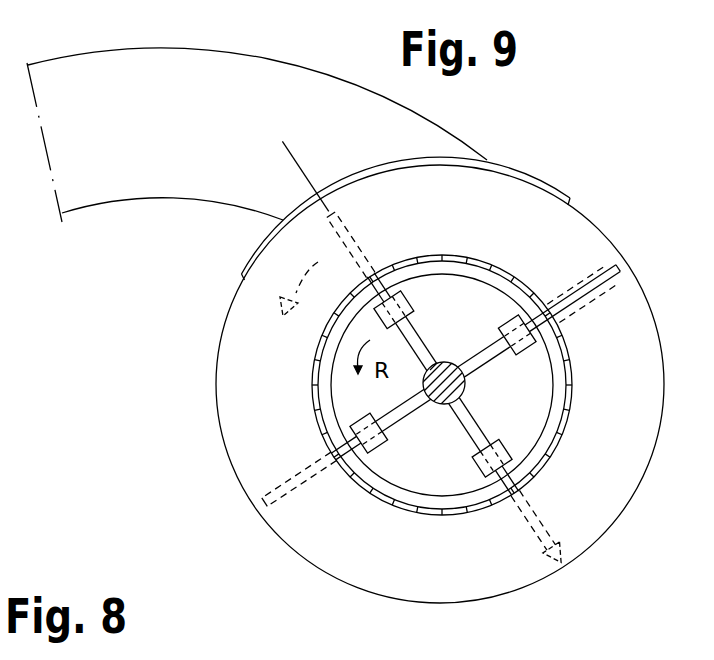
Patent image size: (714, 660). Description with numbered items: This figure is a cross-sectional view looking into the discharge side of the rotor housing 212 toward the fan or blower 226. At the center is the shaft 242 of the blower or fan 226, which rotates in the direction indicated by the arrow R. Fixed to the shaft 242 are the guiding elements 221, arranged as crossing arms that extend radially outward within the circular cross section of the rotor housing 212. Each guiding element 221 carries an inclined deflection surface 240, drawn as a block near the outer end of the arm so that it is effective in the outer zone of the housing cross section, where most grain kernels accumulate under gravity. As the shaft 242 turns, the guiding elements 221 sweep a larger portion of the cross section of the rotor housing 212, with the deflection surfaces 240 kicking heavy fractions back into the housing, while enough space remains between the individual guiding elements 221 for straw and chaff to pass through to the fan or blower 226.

The rotor housing 212 is at (316, 356).
The guiding elements 221 is at (424, 343).
The inclined deflection surface 240 is at (410, 293).
The shaft 242 is at (452, 364).
The blower or fan 226 is at (538, 528).